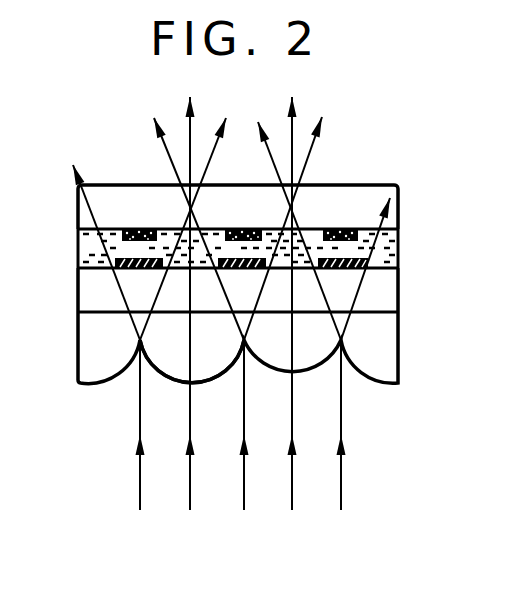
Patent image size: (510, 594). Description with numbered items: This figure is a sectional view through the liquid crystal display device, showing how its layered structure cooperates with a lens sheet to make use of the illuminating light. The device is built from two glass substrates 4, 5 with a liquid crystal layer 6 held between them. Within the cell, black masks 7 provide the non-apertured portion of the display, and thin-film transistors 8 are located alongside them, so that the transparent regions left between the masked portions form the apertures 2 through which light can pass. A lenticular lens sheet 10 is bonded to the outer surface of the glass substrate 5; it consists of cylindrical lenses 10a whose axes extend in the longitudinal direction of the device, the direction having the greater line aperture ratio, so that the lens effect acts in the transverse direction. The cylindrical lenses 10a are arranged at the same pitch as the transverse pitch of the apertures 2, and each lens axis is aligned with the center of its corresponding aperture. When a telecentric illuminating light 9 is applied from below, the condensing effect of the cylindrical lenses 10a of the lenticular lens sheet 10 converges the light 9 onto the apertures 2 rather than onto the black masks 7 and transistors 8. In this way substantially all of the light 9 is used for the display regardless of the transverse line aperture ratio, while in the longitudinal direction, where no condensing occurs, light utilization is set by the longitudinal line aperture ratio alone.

The aperture 2 is at (214, 228).
The glass substrate 4 is at (385, 196).
The glass substrate 5 is at (400, 288).
The liquid crystal layer 6 is at (390, 245).
The black mask 7 is at (337, 268).
The thin-film transistor 8 is at (337, 229).
The telecentric illuminating light 9 is at (245, 487).
The lenticular lens sheet 10 is at (382, 366).
The cylindrical lens 10a is at (170, 383).